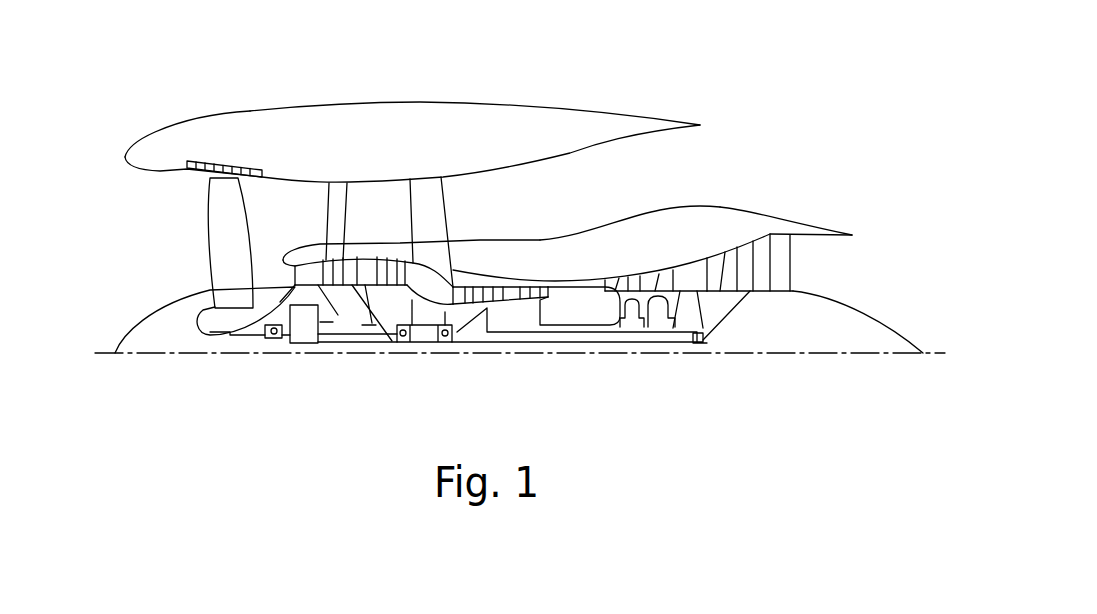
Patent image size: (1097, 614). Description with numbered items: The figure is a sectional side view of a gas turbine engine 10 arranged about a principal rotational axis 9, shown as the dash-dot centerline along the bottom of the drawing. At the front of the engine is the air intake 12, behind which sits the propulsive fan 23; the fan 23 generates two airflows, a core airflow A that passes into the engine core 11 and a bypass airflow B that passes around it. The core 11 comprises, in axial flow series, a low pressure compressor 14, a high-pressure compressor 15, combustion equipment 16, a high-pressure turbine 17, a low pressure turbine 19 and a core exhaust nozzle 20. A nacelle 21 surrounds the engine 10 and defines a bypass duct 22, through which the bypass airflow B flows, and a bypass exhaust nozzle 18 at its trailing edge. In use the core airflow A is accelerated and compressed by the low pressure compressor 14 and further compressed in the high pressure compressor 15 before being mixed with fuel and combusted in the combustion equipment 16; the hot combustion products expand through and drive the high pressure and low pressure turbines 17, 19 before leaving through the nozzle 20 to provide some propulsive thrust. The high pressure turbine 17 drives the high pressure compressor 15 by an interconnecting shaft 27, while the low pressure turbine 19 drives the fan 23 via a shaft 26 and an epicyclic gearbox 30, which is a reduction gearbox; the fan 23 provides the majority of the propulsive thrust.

The principal rotational axis 9 is at (822, 353).
The gas turbine engine 10 is at (186, 122).
The core 11 is at (590, 263).
The air intake 12 is at (137, 190).
The low pressure compressor 14 is at (371, 268).
The high-pressure compressor 15 is at (507, 292).
The combustion equipment 16 is at (577, 297).
The high-pressure turbine 17 is at (638, 273).
The bypass exhaust nozzle 18 is at (695, 142).
The low pressure turbine 19 is at (762, 278).
The core exhaust nozzle 20 is at (852, 273).
The nacelle 21 is at (427, 117).
The bypass duct 22 is at (641, 166).
The propulsive fan 23 is at (217, 257).
The shaft 26 is at (474, 342).
The interconnecting shaft 27 is at (521, 332).
The epicyclic gearbox 30 is at (307, 333).
The core airflow A is at (278, 272).
The bypass airflow B is at (278, 219).